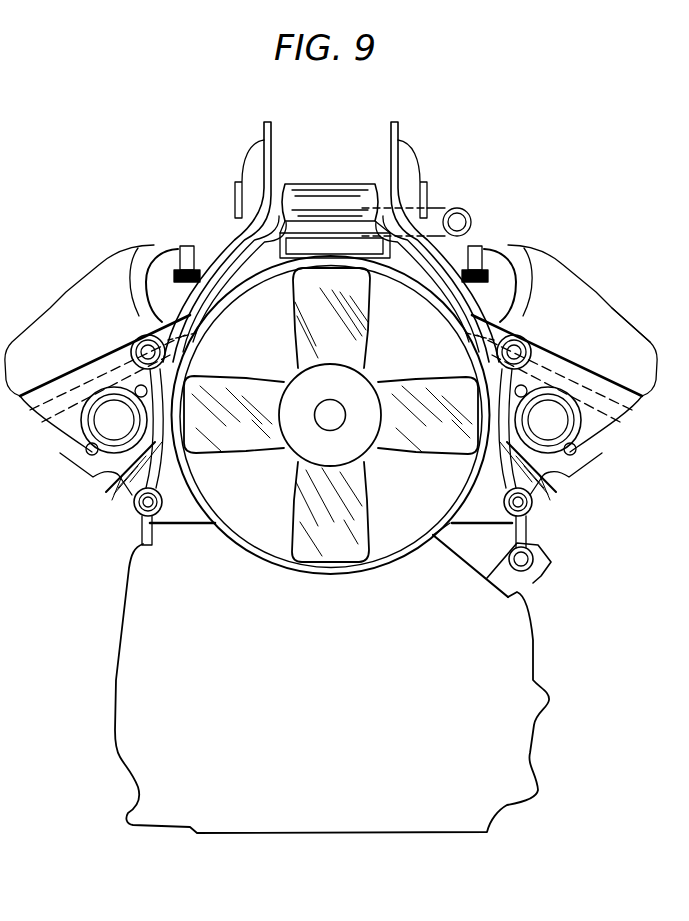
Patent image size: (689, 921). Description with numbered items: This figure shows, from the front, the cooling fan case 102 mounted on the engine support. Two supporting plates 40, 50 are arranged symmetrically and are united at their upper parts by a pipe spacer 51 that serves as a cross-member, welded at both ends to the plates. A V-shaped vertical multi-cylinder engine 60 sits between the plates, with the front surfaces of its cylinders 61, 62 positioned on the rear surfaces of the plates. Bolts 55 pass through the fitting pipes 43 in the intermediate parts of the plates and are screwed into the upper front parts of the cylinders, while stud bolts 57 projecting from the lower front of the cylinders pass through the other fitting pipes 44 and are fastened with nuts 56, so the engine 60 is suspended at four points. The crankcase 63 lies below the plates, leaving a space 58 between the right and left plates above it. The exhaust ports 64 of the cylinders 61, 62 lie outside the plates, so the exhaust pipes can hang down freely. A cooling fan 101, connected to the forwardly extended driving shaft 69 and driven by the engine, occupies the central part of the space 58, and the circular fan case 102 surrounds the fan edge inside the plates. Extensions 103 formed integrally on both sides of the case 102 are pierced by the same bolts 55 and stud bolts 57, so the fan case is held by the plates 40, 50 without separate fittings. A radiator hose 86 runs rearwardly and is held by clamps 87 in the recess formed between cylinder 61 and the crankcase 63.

The supporting plate 40 is at (404, 170).
The fitting pipe 43 is at (133, 355).
The fitting pipe 44 is at (125, 472).
The supporting plate 50 is at (256, 156).
The pipe spacer 51 is at (321, 190).
The bolt 55 is at (146, 338).
The nut 56 is at (143, 507).
The stud bolt 57 is at (145, 520).
The space 58 is at (492, 472).
The V-shaped vertical multi-cylinder engine 60 is at (606, 328).
The cylinder 61 is at (562, 282).
The cylinder 62 is at (82, 296).
The crankcase 63 is at (523, 735).
The exhaust port 64 is at (110, 419).
The driving shaft 69 is at (361, 384).
The radiator hose 86 is at (536, 563).
The clamp 87 is at (535, 542).
The cooling fan 101 is at (306, 533).
The fan case 102 is at (318, 575).
The extension 103 is at (184, 336).